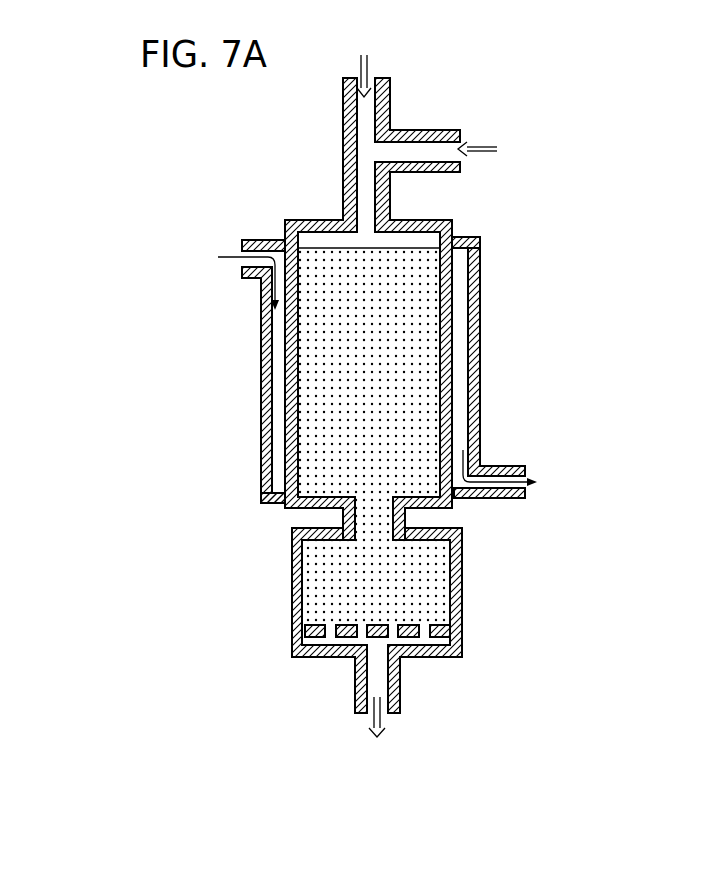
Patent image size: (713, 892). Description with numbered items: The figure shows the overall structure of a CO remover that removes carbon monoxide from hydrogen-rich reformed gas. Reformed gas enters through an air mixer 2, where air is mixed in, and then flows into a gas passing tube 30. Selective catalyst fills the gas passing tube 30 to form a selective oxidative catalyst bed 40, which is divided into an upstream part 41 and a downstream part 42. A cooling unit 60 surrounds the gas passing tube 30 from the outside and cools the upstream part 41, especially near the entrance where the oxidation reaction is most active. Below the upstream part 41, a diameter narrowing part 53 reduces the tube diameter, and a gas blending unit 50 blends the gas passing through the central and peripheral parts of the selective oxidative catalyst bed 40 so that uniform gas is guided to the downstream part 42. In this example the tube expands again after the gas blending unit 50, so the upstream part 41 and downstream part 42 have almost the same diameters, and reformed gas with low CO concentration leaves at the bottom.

The air mixer 2 is at (250, 158).
The gas passing tube 30 is at (292, 608).
The selective oxidative catalyst bed 40 is at (572, 520).
The upstream part 41 is at (458, 498).
The downstream part 42 is at (463, 593).
The gas blending unit 50 is at (442, 513).
The diameter narrowing part 53 is at (274, 509).
The cooling unit 60 is at (277, 382).